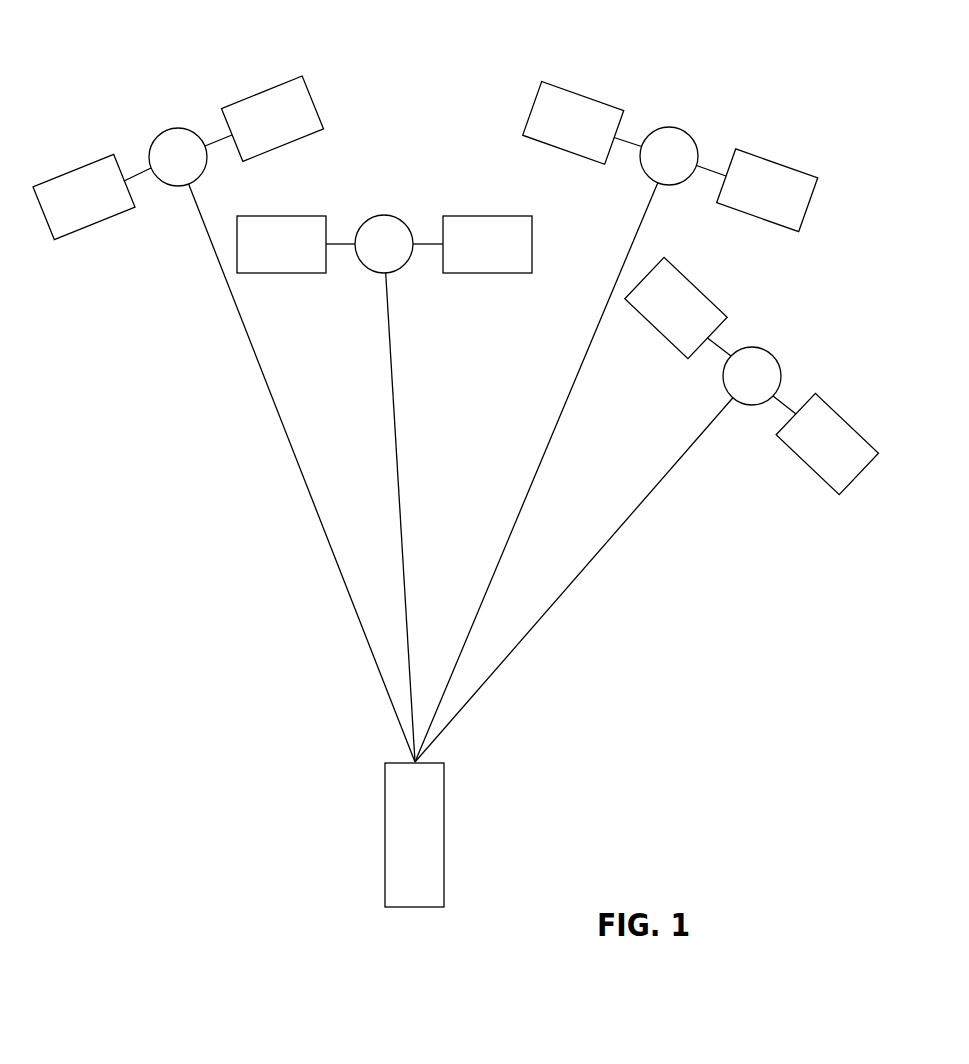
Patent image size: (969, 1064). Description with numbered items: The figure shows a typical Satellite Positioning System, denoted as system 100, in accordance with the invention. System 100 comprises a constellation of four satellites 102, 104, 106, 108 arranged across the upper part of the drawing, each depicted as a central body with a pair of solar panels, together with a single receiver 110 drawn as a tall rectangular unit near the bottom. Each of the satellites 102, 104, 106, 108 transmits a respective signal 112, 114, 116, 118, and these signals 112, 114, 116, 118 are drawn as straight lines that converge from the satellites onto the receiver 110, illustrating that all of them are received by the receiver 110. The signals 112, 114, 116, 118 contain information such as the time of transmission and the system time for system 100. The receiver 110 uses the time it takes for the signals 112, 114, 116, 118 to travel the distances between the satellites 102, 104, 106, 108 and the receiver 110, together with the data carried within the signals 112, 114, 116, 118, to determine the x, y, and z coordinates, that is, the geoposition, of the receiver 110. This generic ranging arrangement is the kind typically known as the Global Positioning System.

The system 100 is at (442, 99).
The satellite 102 is at (157, 136).
The satellite 104 is at (376, 214).
The satellite 106 is at (667, 127).
The satellite 108 is at (777, 357).
The receiver 110 is at (386, 832).
The signal 112 is at (269, 390).
The signal 114 is at (390, 377).
The signal 116 is at (622, 268).
The signal 118 is at (670, 467).